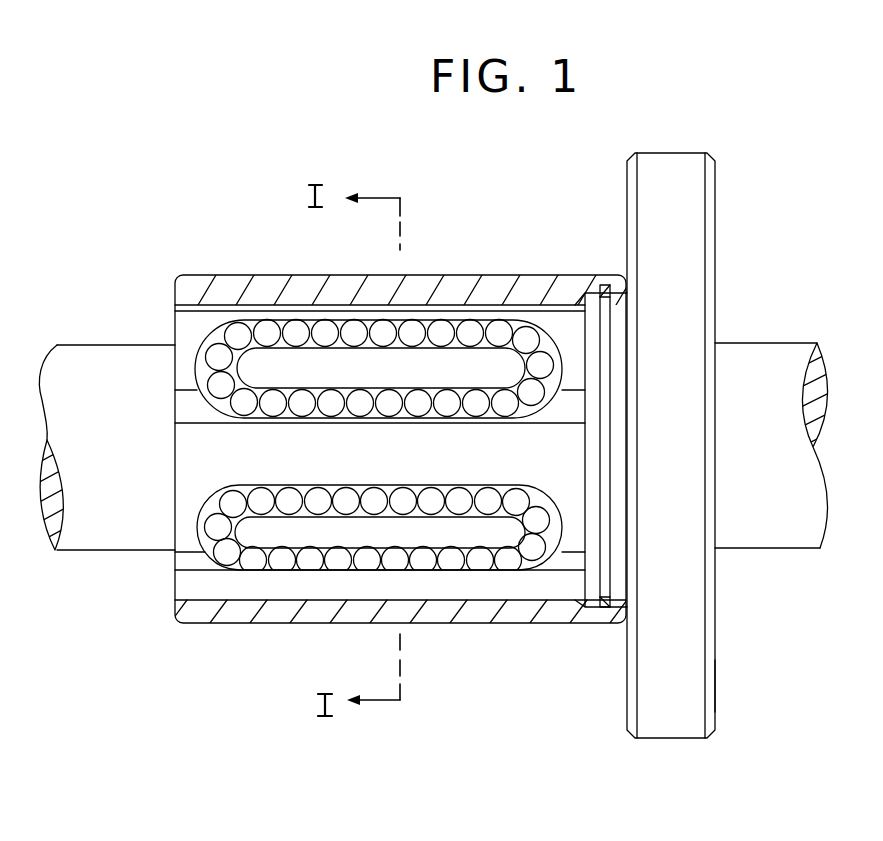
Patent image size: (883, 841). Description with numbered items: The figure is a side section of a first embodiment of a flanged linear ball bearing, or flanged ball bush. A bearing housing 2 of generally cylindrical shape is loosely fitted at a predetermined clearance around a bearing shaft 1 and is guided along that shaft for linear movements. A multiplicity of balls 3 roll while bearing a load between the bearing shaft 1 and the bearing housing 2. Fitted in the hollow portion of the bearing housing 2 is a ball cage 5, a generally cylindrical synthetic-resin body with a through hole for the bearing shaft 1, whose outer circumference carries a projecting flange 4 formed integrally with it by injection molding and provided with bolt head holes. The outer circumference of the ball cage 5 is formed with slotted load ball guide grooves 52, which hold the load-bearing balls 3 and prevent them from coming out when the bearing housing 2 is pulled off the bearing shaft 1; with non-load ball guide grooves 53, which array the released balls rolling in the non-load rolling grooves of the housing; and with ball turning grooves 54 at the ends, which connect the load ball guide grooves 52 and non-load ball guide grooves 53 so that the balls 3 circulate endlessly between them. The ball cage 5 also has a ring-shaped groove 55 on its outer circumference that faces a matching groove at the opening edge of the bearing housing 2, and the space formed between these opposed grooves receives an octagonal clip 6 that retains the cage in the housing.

The bearing shaft 1 is at (781, 336).
The bearing housing 2 is at (225, 268).
The balls 3 is at (470, 310).
The flange 4 is at (697, 185).
The ball cage 5 is at (728, 687).
The octagonal clip 6 is at (607, 285).
The load ball guide grooves 52 is at (288, 388).
The non-load ball guide grooves 53 is at (423, 320).
The ball turning grooves 54 is at (541, 320).
The ring-shaped groove 55 is at (608, 596).